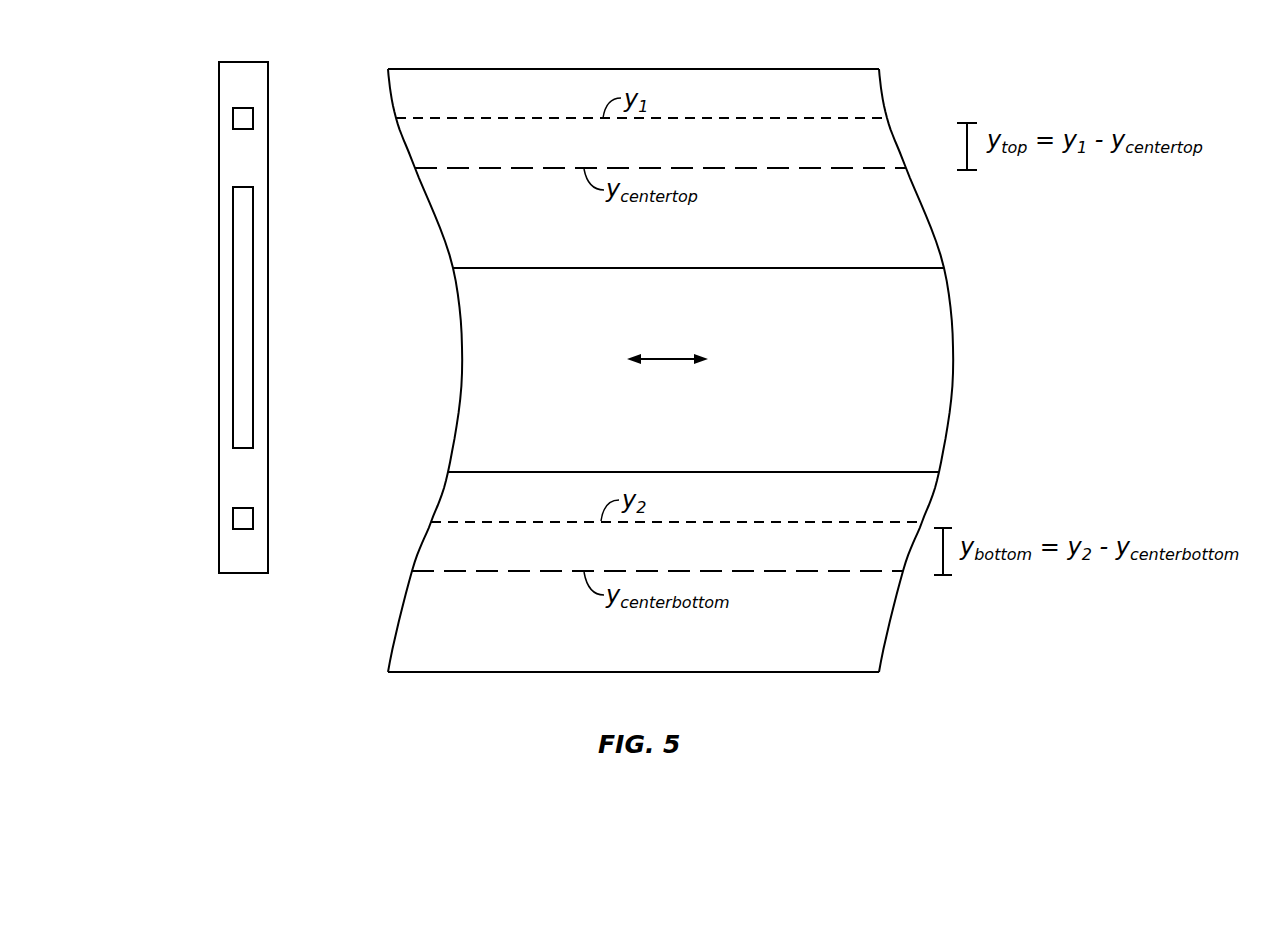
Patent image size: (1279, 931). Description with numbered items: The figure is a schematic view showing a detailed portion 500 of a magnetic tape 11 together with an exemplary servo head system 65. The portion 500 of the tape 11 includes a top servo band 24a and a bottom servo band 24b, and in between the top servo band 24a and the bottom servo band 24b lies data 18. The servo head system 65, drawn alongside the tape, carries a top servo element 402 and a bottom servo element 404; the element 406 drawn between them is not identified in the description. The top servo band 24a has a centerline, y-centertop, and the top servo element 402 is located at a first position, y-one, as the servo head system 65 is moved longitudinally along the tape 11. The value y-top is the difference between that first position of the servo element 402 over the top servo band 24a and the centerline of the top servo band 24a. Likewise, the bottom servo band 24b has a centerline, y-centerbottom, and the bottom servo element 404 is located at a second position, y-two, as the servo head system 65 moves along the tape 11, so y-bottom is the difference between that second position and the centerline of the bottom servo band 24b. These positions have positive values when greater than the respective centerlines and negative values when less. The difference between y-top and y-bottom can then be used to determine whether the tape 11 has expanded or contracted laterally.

The servo head system 65 is at (232, 72).
The top servo element 402 is at (240, 118).
The data read/write element array 406 is at (242, 240).
The bottom servo element 404 is at (240, 518).
The portion of magnetic tape 500 is at (877, 55).
The magnetic tape 11 is at (398, 80).
The top servo band 24a is at (444, 226).
The data 18 is at (470, 374).
The bottom servo band 24b is at (402, 625).